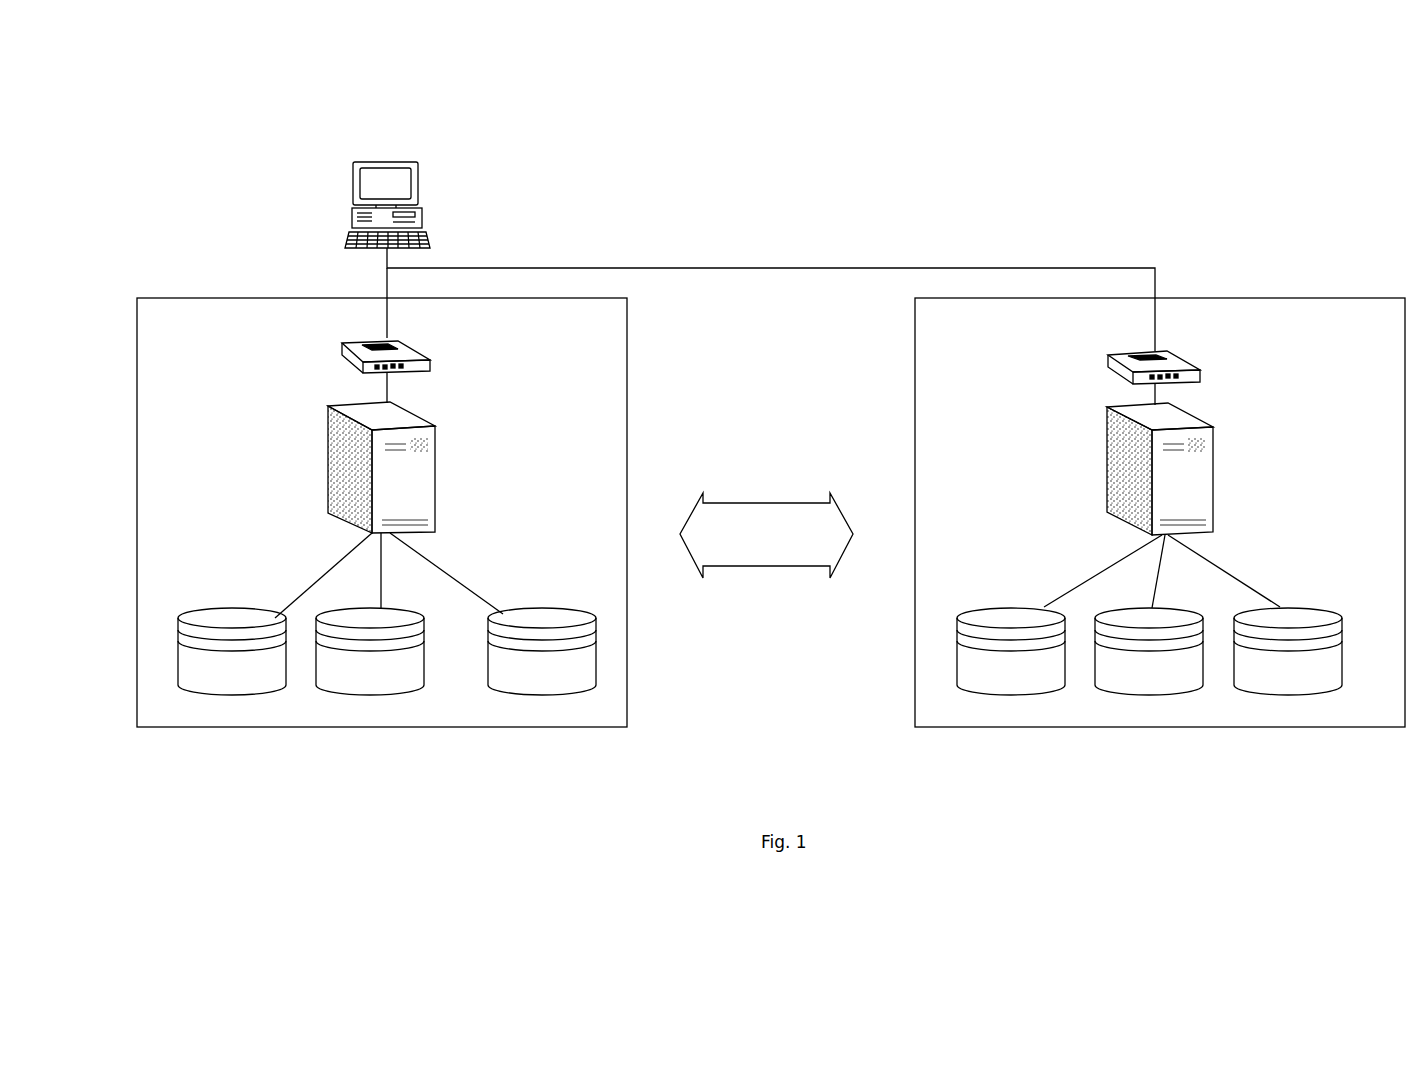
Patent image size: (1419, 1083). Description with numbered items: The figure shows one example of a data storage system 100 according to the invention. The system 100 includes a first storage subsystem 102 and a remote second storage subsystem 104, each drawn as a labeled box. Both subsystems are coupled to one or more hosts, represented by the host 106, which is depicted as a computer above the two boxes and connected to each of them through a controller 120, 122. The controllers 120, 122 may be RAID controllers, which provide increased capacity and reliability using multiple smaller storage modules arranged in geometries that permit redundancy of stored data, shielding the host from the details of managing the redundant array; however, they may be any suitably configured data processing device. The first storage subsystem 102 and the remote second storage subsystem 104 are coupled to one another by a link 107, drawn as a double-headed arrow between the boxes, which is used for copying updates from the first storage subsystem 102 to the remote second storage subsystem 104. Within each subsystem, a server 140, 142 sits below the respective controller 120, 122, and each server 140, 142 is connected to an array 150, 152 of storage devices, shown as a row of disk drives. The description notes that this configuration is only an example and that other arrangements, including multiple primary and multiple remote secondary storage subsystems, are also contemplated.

The data storage system 100 is at (858, 163).
The first storage subsystem 102 is at (185, 293).
The remote second storage subsystem 104 is at (1187, 292).
The host 106 is at (424, 210).
The link 107 is at (750, 506).
The controller 120 is at (441, 355).
The controller 122 is at (1118, 372).
The server 140 is at (430, 464).
The server 142 is at (1103, 453).
The array 150 is at (387, 710).
The array 152 is at (1091, 710).